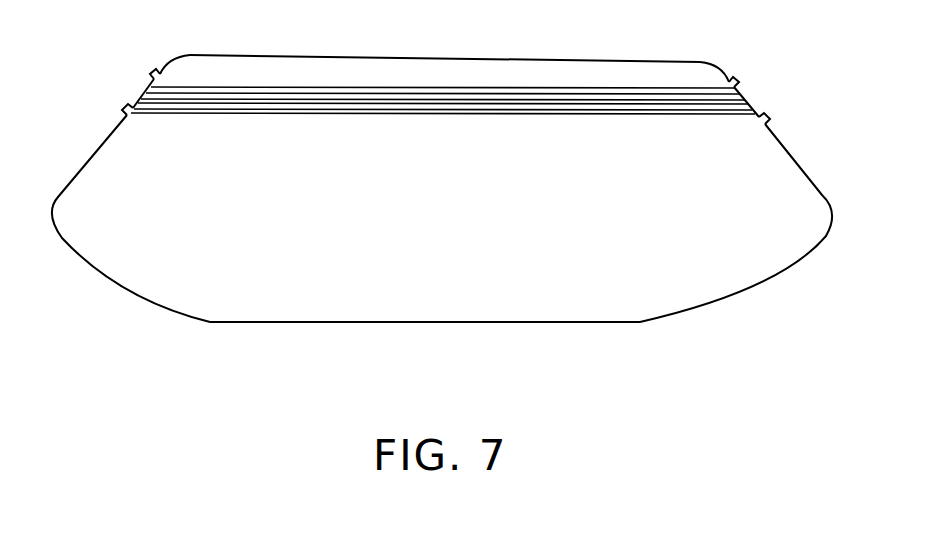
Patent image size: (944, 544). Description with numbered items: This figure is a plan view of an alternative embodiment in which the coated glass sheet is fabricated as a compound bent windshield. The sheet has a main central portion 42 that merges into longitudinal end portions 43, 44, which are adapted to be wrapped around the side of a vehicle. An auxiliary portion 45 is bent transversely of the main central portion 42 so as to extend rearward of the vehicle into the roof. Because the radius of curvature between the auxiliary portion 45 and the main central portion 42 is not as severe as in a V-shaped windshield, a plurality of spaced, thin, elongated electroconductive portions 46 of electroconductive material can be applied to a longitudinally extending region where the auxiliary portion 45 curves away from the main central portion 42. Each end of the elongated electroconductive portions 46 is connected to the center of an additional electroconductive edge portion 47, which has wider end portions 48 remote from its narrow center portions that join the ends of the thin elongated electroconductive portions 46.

The main central portion 42 is at (470, 223).
The longitudinal end portion 43 is at (132, 224).
The longitudinal end portion 44 is at (806, 229).
The auxiliary portion 45 is at (423, 73).
The thin elongated electroconductive portions 46 is at (497, 112).
The electroconductive edge portion 47 is at (137, 91).
The wider end portions 48 is at (129, 112).